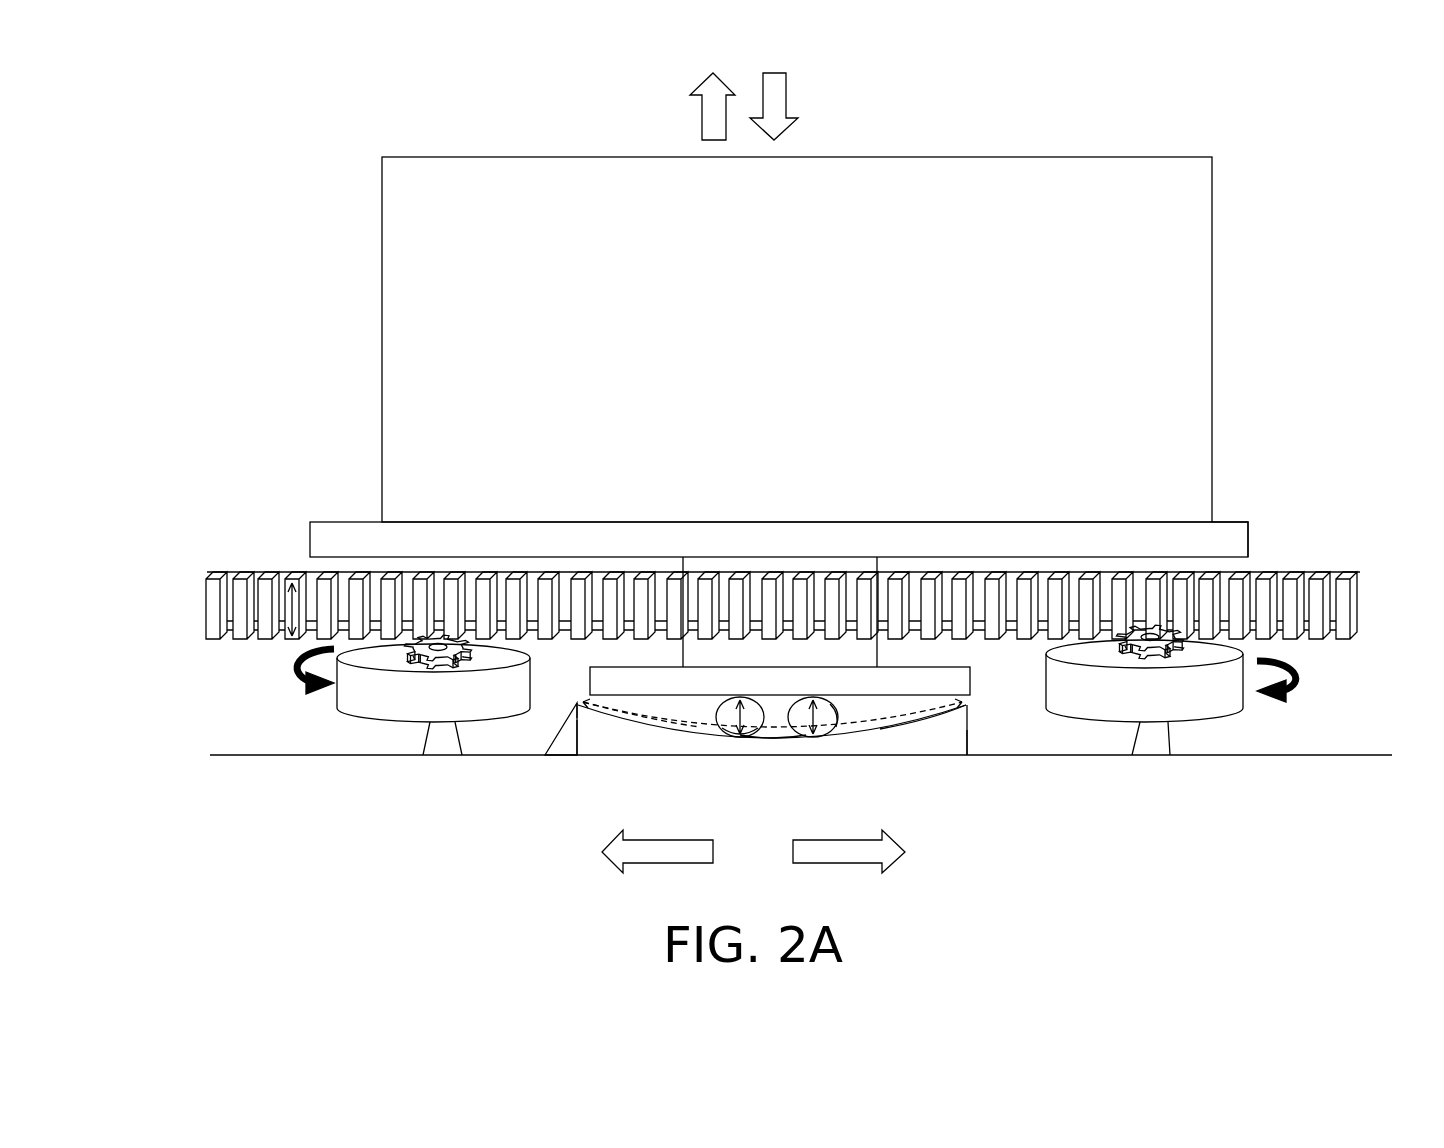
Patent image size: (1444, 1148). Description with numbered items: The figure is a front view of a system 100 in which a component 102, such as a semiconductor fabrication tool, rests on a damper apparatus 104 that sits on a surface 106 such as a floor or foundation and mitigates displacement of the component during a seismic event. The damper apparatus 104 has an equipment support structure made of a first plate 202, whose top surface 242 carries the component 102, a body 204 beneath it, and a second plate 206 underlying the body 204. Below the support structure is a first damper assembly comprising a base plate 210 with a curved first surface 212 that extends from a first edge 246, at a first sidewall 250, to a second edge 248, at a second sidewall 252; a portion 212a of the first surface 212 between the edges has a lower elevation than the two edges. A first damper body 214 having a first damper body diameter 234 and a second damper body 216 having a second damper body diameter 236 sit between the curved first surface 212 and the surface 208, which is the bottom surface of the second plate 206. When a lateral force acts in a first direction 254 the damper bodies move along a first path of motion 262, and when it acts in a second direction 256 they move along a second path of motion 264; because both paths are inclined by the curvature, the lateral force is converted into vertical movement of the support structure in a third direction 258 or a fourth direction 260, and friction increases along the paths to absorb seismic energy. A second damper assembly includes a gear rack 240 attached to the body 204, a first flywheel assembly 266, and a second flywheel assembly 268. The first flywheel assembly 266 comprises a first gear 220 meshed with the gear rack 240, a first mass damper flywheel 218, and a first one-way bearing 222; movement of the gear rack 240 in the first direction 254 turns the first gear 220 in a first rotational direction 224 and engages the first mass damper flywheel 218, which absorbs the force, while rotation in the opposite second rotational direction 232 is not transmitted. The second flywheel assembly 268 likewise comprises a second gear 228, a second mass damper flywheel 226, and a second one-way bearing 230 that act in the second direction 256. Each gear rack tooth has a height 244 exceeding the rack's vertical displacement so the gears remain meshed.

The system 100 is at (170, 80).
The component 102 is at (1208, 355).
The damper apparatus 104 is at (232, 456).
The surface 106 is at (1335, 757).
The first plate 202 is at (335, 532).
The body 204 is at (700, 655).
The second plate 206 is at (635, 686).
The surface of the equipment support structure 208 is at (698, 697).
The base plate 210 is at (612, 740).
The first surface 212 is at (904, 726).
The portion of the first surface 212a is at (774, 740).
The first damper body 214 is at (735, 704).
The second damper body 216 is at (820, 702).
The first mass damper flywheel 218 is at (360, 705).
The first gear 220 is at (440, 662).
The first one-way bearing 222 is at (440, 745).
The first rotational direction 224 is at (292, 682).
The second mass damper flywheel 226 is at (1225, 705).
The second gear 228 is at (1152, 660).
The second one-way bearing 230 is at (1155, 745).
The second rotational direction 232 is at (1305, 673).
The first damper body diameter 234 is at (740, 733).
The second damper body diameter 236 is at (812, 720).
The gear rack 240 is at (207, 598).
The top surface 242 is at (1235, 522).
The height 244 is at (296, 624).
The first edge 246 is at (576, 708).
The second edge 248 is at (968, 706).
The first sidewall 250 is at (576, 740).
The second sidewall 252 is at (968, 736).
The first direction 254 is at (660, 866).
The second direction 256 is at (830, 866).
The third direction 258 is at (702, 110).
The fourth direction 260 is at (786, 100).
The first path of motion 262 is at (645, 724).
The second path of motion 264 is at (931, 715).
The first flywheel assembly 266 is at (332, 800).
The second flywheel assembly 268 is at (1248, 806).